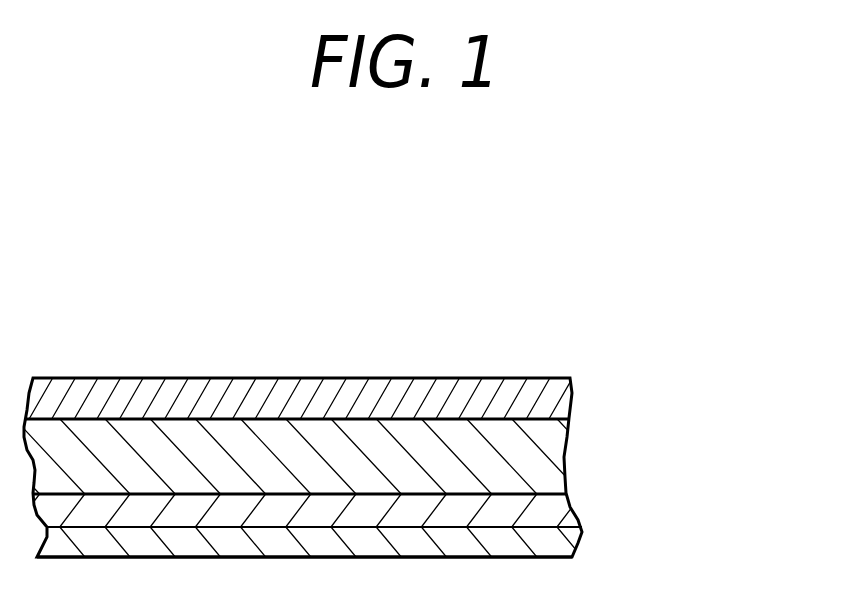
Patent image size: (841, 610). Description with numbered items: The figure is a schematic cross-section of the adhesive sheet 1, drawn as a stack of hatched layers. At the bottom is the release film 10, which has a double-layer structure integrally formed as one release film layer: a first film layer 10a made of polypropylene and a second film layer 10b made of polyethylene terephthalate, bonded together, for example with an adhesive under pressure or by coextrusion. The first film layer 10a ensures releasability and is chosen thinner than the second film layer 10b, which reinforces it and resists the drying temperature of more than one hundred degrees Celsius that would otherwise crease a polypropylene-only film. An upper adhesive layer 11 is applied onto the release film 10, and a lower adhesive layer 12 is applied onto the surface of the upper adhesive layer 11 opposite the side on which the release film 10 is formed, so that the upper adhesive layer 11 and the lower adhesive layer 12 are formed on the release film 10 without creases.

The adhesive sheet 1 is at (728, 350).
The release film 10 is at (688, 481).
The first film layer 10a is at (565, 497).
The second film layer 10b is at (578, 532).
The upper adhesive layer 11 is at (565, 458).
The lower adhesive layer 12 is at (572, 382).